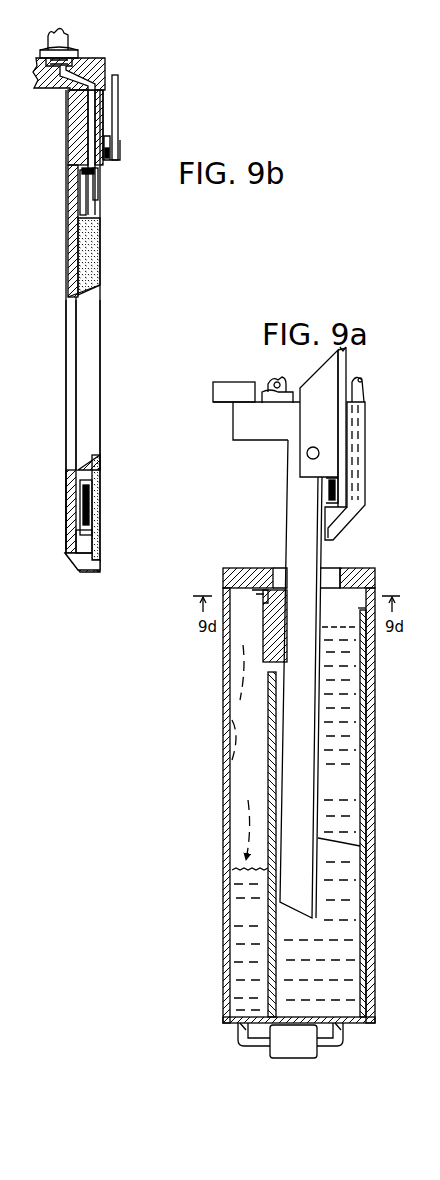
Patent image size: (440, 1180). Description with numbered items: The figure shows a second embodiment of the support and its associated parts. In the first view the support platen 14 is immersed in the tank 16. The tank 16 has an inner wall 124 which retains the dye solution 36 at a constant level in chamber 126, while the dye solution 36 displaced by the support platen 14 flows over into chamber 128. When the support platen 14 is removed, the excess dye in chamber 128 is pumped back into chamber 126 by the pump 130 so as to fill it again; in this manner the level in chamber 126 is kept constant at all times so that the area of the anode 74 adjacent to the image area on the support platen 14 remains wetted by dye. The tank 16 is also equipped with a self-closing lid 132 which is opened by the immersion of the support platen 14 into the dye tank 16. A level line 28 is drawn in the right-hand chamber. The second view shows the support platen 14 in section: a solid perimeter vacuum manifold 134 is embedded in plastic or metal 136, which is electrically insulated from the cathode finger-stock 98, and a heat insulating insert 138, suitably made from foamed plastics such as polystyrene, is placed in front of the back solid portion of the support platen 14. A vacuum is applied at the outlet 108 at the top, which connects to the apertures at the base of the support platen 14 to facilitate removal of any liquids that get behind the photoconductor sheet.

In FIG. 9b, the outlet 108 is at (64, 42).
In FIG. 9b, the plastic or metal 136 is at (78, 120).
In FIG. 9b, the cathode finger-stock 98 is at (110, 148).
In FIG. 9a, the cathode finger-stock 98 is at (338, 500).
In FIG. 9b, the solid perimeter vacuum manifold 134 is at (103, 192).
In FIG. 9b, the support platen 14 is at (70, 264).
In FIG. 9a, the support platen 14 is at (303, 534).
In FIG. 9b, the heat insulating insert 138 is at (100, 270).
In FIG. 9a, the self-closing lid 132 is at (270, 640).
In FIG. 9a, the tank 16 is at (374, 800).
In FIG. 9a, the anode 74 is at (365, 728).
In FIG. 9a, the chamber 126 is at (350, 795).
In FIG. 9a, the liquid level line 28 is at (362, 846).
In FIG. 9a, the chamber 128 is at (258, 925).
In FIG. 9a, the inner wall 124 is at (276, 972).
In FIG. 9a, the dye solution 36 is at (243, 1002).
In FIG. 9a, the pump 130 is at (285, 1050).